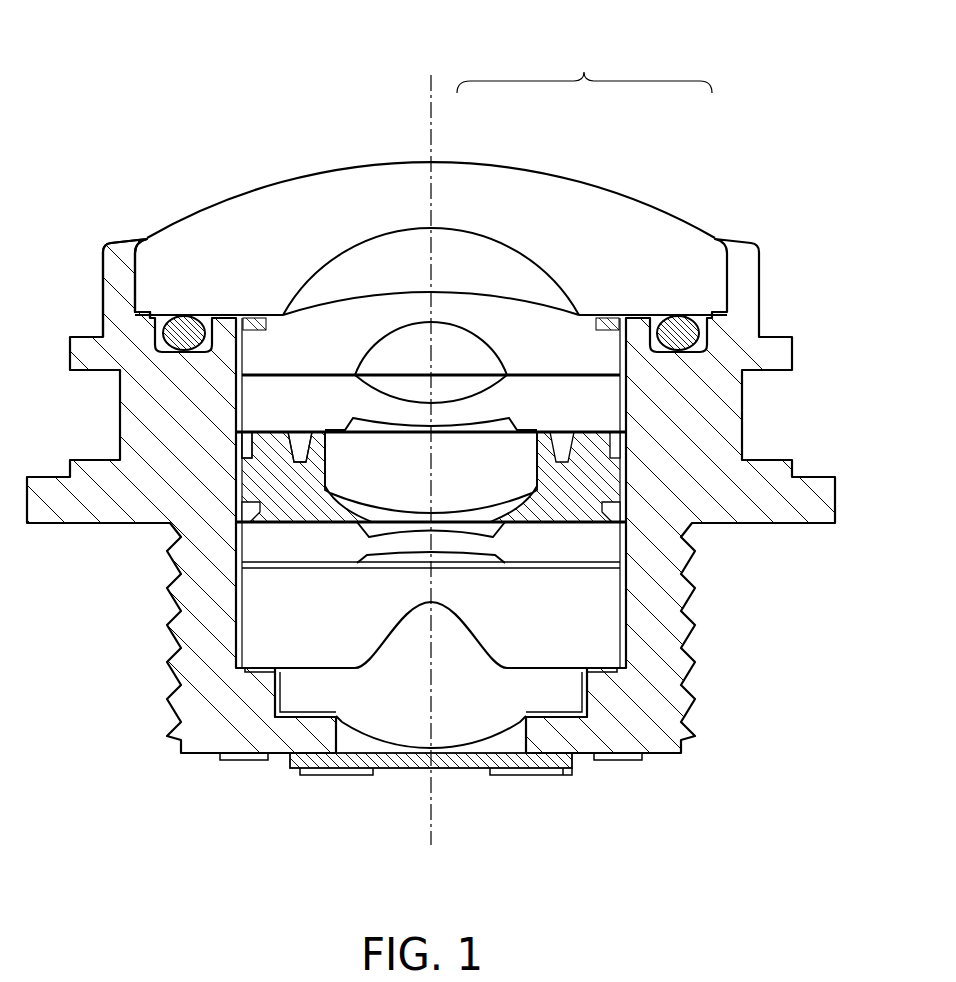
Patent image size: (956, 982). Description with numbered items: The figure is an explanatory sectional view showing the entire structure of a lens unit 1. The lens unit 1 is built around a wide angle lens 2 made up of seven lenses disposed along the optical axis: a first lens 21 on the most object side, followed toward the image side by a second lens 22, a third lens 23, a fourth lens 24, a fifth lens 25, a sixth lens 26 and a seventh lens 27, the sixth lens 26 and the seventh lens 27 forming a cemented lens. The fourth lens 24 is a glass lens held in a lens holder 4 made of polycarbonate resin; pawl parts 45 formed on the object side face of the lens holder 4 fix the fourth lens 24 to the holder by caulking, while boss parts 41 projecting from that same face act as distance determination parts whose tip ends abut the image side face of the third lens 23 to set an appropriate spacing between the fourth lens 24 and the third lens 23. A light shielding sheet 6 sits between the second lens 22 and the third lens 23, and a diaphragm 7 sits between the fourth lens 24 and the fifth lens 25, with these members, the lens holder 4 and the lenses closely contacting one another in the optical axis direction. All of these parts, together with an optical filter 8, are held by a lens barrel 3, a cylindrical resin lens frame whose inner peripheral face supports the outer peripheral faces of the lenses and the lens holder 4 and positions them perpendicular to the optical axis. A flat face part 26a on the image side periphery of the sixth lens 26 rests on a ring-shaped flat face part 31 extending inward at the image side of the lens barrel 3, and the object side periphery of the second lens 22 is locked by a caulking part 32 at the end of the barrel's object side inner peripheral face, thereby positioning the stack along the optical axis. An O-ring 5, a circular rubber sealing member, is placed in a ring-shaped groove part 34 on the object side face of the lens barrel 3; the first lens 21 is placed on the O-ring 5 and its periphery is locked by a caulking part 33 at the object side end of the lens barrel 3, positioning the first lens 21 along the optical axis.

The lens unit 1 is at (95, 40).
The wide angle lens 2 is at (431, 396).
The lens barrel 3 is at (198, 660).
The lens holder 4 is at (593, 482).
The O-ring 5 is at (688, 332).
The light shielding sheet 6 is at (625, 363).
The diaphragm 7 is at (618, 503).
The optical filter 8 is at (468, 760).
The first lens 21 is at (461, 197).
The second lens 22 is at (458, 308).
The third lens 23 is at (459, 419).
The fourth lens 24 is at (468, 477).
The fifth lens 25 is at (475, 547).
The sixth lens 26 is at (487, 615).
The flat face part 26a is at (262, 673).
The seventh lens 27 is at (493, 689).
The ring-shaped flat face part 31 is at (263, 675).
The caulking part 32 is at (238, 315).
The caulking part 33 is at (130, 250).
The ring-shaped groove part 34 is at (213, 315).
The boss part 41 is at (243, 432).
The pawl part 45 is at (322, 443).